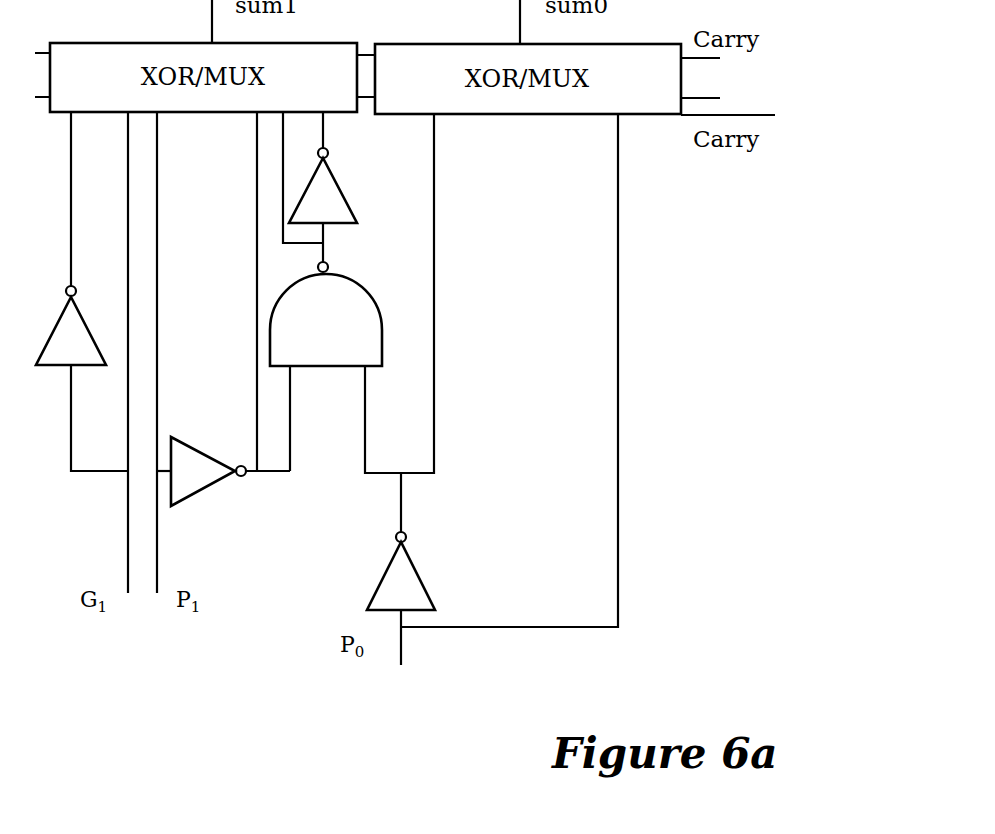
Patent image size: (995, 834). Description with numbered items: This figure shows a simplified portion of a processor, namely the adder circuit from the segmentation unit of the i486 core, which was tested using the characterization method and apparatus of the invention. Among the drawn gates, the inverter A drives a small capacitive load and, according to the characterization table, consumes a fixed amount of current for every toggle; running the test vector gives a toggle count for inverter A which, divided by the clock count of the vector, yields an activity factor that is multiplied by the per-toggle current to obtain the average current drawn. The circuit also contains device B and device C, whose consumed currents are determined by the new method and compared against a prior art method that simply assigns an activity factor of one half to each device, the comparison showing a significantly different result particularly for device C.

The inverter A is at (409, 565).
The device B is at (326, 311).
The device C is at (208, 481).